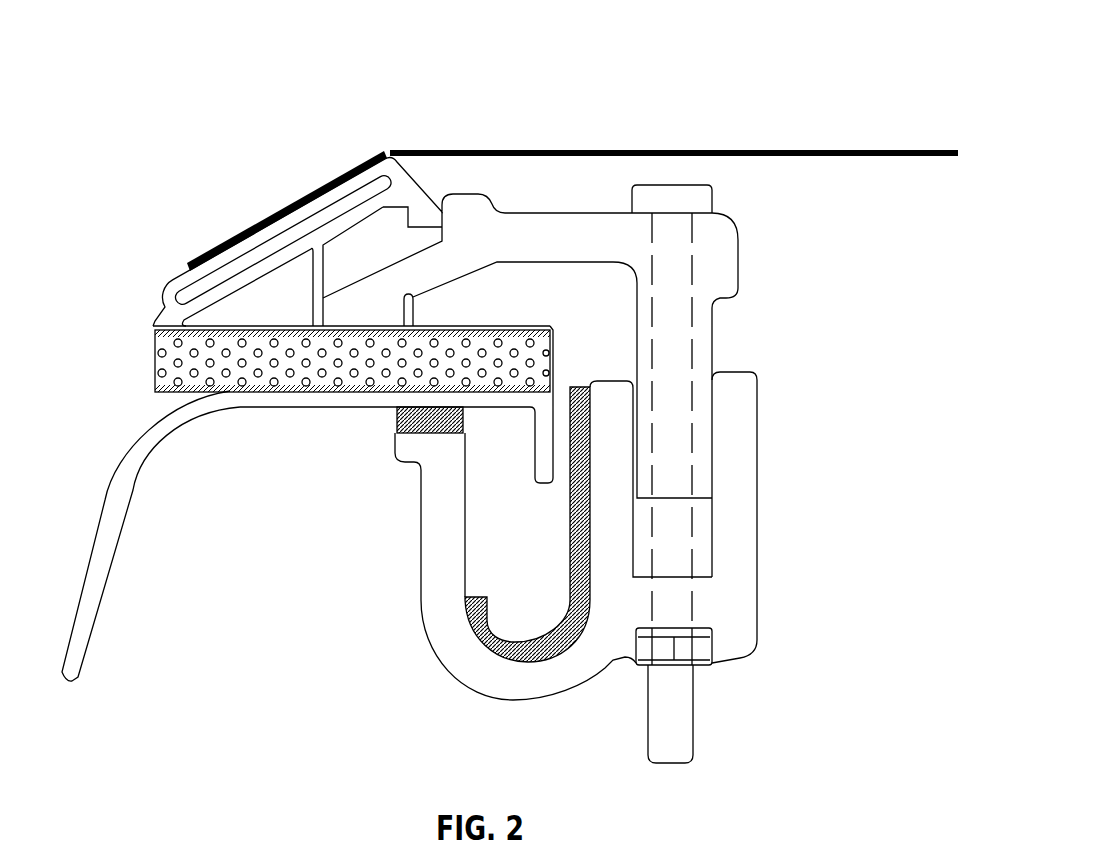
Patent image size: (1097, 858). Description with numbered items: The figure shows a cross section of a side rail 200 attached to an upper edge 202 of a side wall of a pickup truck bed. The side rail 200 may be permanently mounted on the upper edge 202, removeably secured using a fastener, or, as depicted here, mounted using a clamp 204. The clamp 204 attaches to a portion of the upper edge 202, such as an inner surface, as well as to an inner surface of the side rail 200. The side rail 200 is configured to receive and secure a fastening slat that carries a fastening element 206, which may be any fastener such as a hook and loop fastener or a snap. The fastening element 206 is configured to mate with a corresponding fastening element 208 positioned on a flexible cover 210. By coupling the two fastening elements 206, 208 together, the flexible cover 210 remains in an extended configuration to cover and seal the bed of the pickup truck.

The side rail 200 is at (173, 312).
The upper edge 202 is at (131, 487).
The clamp 204 is at (517, 686).
The fastening element 206 is at (292, 228).
The corresponding fastening element 208 is at (263, 220).
The flexible cover 210 is at (562, 150).